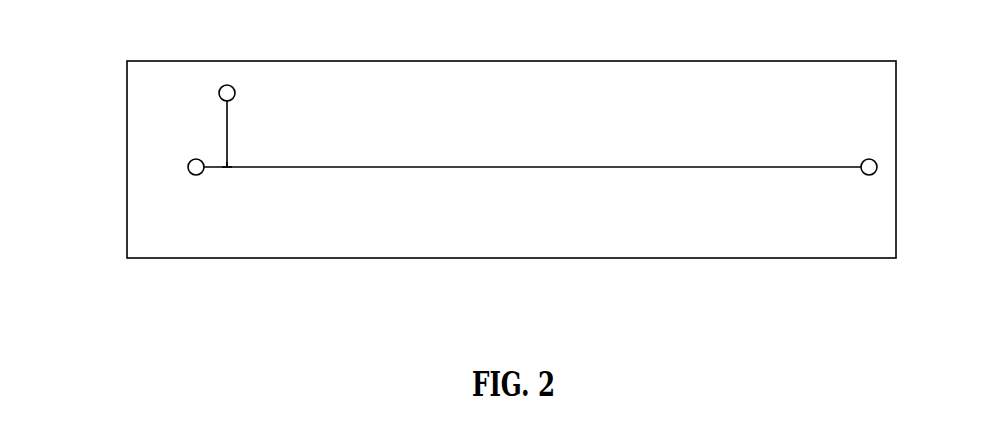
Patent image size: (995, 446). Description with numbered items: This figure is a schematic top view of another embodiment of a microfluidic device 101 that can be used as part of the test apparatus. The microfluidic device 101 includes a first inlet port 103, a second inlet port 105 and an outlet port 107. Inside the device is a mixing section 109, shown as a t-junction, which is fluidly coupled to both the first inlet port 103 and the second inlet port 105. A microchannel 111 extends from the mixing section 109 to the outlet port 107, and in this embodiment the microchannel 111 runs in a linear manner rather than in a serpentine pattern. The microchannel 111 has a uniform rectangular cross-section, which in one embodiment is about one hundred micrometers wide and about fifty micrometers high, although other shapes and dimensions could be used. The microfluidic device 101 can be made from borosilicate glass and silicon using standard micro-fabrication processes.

The microfluidic device 101 is at (357, 258).
The first inlet port 103 is at (188, 167).
The second inlet port 105 is at (228, 85).
The outlet port 107 is at (877, 165).
The mixing section 109 is at (222, 181).
The microchannel 111 is at (532, 167).